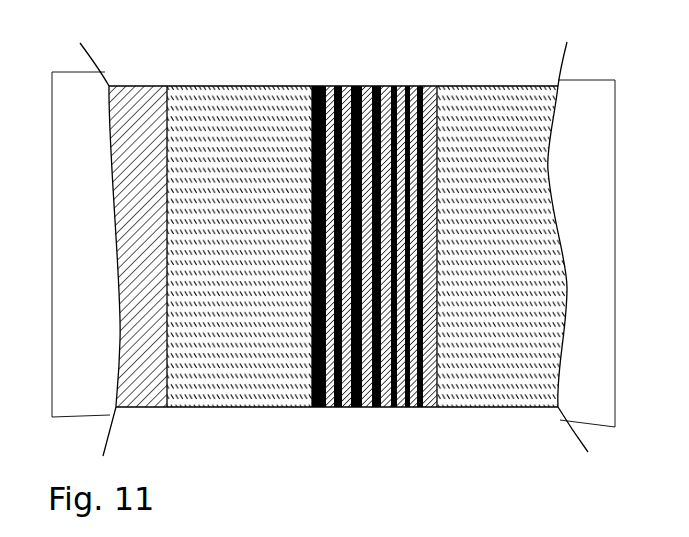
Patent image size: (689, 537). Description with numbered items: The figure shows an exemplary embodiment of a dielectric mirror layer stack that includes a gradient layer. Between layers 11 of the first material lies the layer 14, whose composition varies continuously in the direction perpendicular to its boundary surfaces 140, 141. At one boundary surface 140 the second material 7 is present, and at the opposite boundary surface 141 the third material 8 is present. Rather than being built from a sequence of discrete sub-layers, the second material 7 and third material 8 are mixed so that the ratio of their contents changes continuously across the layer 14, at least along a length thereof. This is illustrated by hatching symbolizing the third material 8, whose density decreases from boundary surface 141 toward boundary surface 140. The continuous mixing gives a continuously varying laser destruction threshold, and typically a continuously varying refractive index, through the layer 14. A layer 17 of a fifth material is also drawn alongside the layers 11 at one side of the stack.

The second material 7 is at (313, 83).
The third material 8 is at (418, 85).
The layers of the first material 11 is at (243, 97).
The layer 14 is at (377, 249).
The layer of a fifth material 17 is at (150, 105).
The boundary surface 140 is at (313, 325).
The boundary surface 141 is at (437, 320).